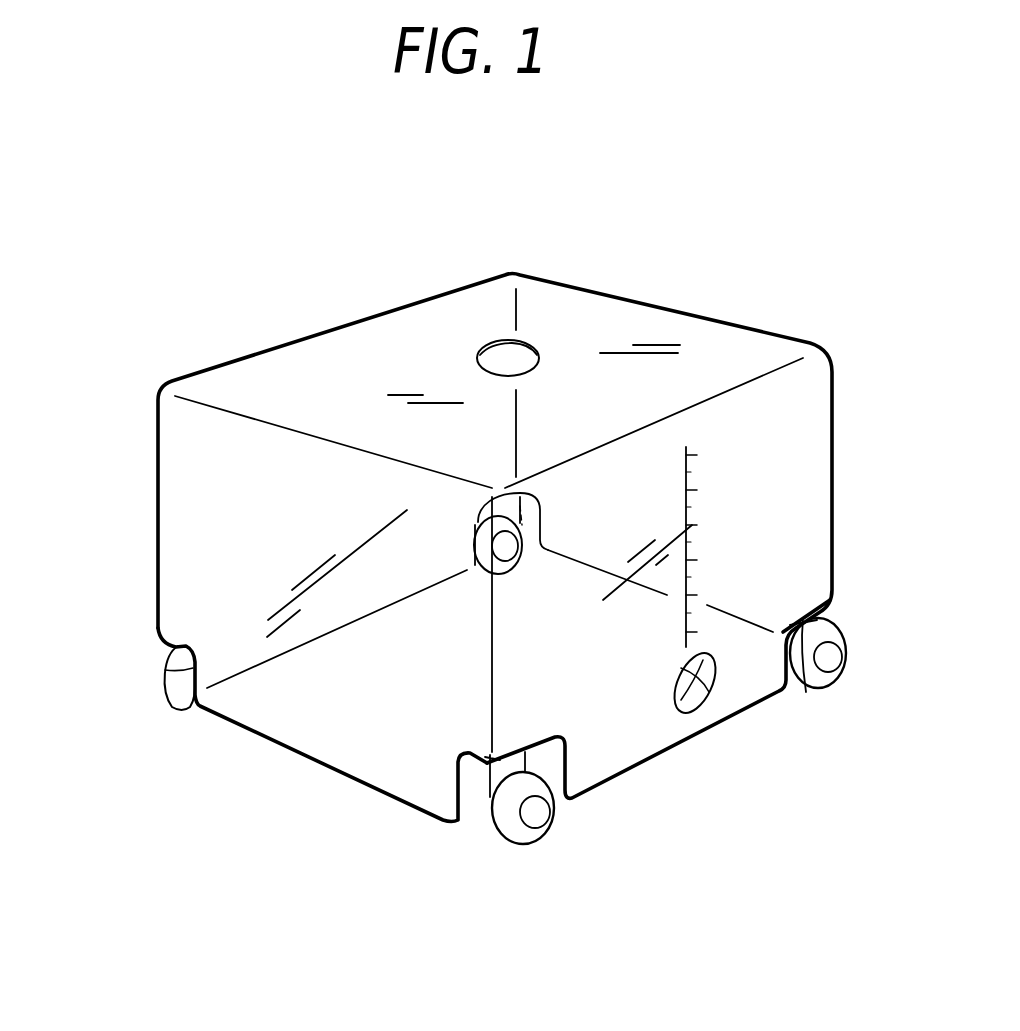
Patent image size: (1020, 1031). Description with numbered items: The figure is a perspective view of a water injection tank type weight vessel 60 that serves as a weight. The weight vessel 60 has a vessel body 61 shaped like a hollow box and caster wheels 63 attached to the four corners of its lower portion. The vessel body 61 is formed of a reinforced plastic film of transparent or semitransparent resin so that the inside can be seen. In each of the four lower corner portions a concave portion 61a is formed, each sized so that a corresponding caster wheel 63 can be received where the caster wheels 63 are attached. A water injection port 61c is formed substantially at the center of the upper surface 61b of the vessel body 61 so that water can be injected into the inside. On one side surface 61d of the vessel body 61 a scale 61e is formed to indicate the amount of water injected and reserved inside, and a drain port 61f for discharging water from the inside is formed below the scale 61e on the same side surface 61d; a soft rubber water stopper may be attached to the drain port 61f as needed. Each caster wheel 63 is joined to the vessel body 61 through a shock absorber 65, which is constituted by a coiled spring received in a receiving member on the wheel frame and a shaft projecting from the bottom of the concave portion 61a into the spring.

The weight vessel 60 is at (440, 548).
The vessel body 61 is at (232, 358).
The concave portion 61a is at (543, 500).
The upper surface 61b is at (352, 338).
The water injection port 61c is at (507, 350).
The side surface 61d is at (826, 383).
The scale 61e is at (714, 530).
The drain port 61f is at (702, 712).
The caster wheel 63 is at (518, 572).
The shock absorber 65 is at (805, 692).